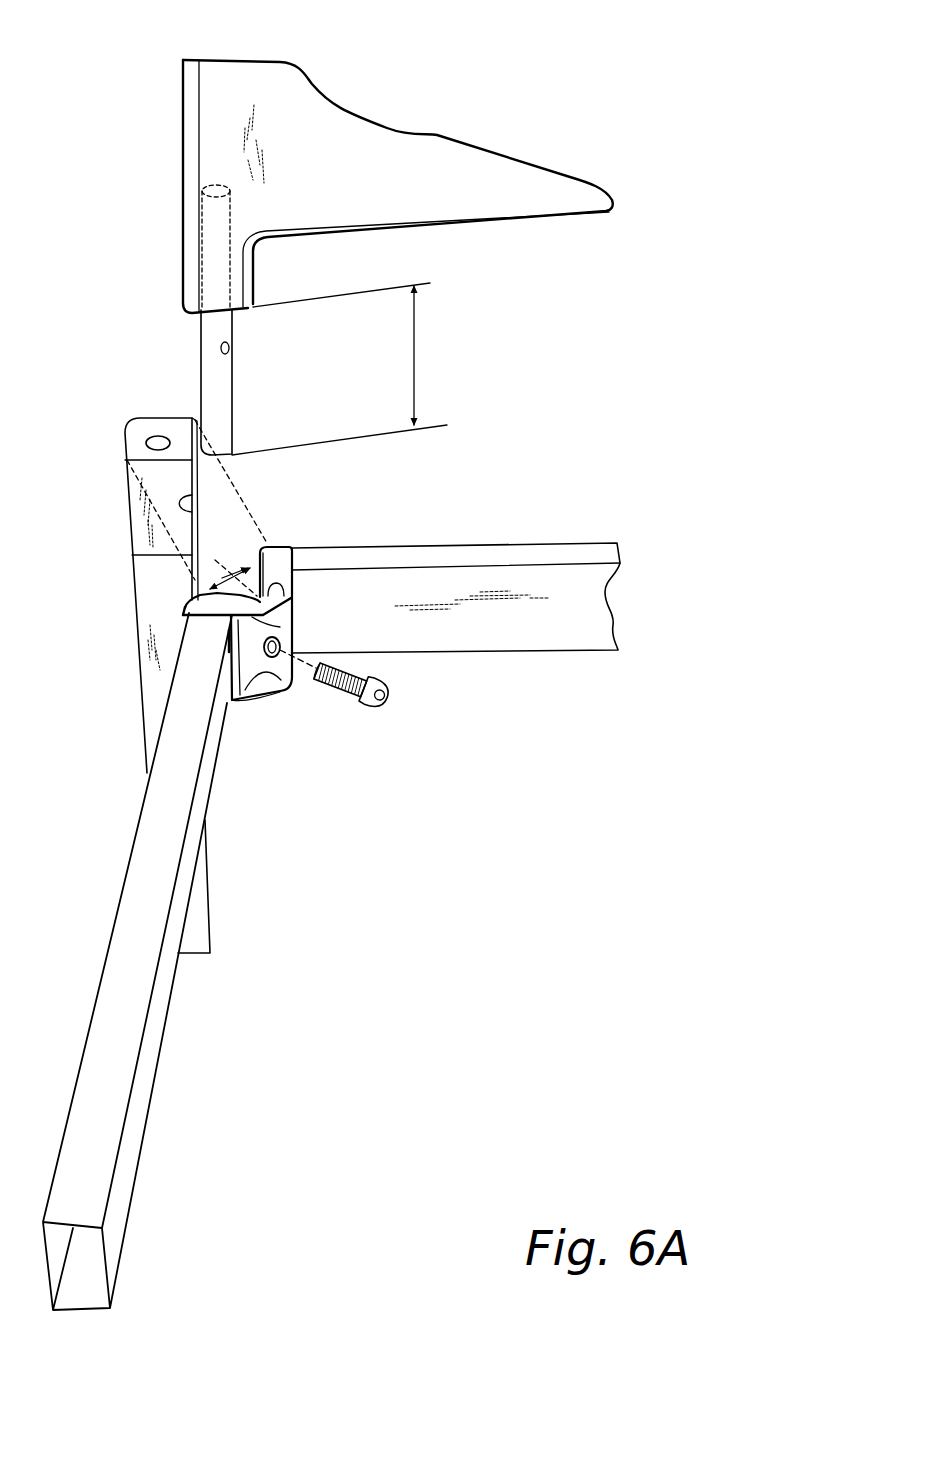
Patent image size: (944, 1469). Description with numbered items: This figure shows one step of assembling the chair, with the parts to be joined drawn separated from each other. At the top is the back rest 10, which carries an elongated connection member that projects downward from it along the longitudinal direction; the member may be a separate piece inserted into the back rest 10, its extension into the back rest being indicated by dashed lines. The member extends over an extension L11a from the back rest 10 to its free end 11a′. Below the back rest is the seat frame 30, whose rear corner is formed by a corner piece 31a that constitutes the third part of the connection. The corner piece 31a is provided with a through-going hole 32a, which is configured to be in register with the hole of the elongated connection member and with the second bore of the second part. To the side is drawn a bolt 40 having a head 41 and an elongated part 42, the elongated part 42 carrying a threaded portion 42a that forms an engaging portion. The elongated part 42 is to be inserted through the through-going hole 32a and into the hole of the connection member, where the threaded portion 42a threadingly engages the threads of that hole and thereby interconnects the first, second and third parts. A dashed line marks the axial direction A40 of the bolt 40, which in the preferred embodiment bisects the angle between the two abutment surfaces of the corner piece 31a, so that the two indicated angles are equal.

The back rest 10 is at (424, 160).
The free end of the elongated connection member 11a′ is at (218, 452).
The extension of the elongated connection member L11a is at (354, 369).
The frame 30 is at (522, 553).
The corner piece 31a is at (278, 562).
The through-going hole 32a is at (276, 656).
The bolt 40 is at (370, 689).
The head 41 is at (396, 686).
The elongated part 42 is at (366, 701).
The threaded portion 42a is at (334, 670).
The axial direction of the bolt A40 is at (310, 657).